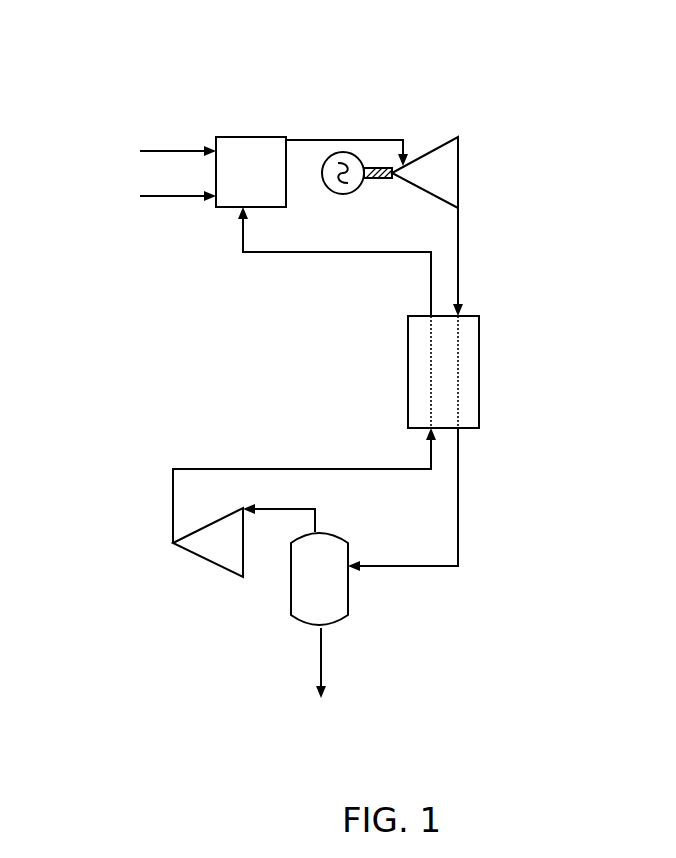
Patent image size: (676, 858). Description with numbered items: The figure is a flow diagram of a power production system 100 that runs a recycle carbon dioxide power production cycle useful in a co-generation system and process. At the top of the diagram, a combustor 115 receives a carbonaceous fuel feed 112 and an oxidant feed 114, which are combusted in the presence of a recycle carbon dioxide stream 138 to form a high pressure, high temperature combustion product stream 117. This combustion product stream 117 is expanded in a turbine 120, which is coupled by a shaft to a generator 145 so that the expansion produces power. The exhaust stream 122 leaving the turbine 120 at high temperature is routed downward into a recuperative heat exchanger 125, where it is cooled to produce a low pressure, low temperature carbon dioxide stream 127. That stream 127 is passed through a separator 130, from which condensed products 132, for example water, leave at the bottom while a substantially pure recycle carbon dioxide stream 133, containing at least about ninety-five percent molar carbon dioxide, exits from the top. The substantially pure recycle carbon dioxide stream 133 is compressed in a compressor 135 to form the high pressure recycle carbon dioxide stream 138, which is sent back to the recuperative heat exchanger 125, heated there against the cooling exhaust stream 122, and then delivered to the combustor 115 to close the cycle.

The power production system 100 is at (137, 43).
The carbonaceous fuel feed 112 is at (178, 143).
The oxidant feed 114 is at (178, 188).
The combustor 115 is at (226, 208).
The combustion product stream 117 is at (347, 142).
The turbine 120 is at (458, 143).
The exhaust stream 122 is at (476, 262).
The recuperative heat exchanger 125 is at (408, 343).
The low pressure, low temperature CO2 stream 127 is at (403, 499).
The separator 130 is at (291, 588).
The condensed products 132 is at (340, 663).
The substantially pure recycle CO2 stream 133 is at (279, 510).
The compressor 135 is at (188, 552).
The high pressure recycle CO2 stream 138 is at (304, 375).
The generator 145 is at (355, 194).